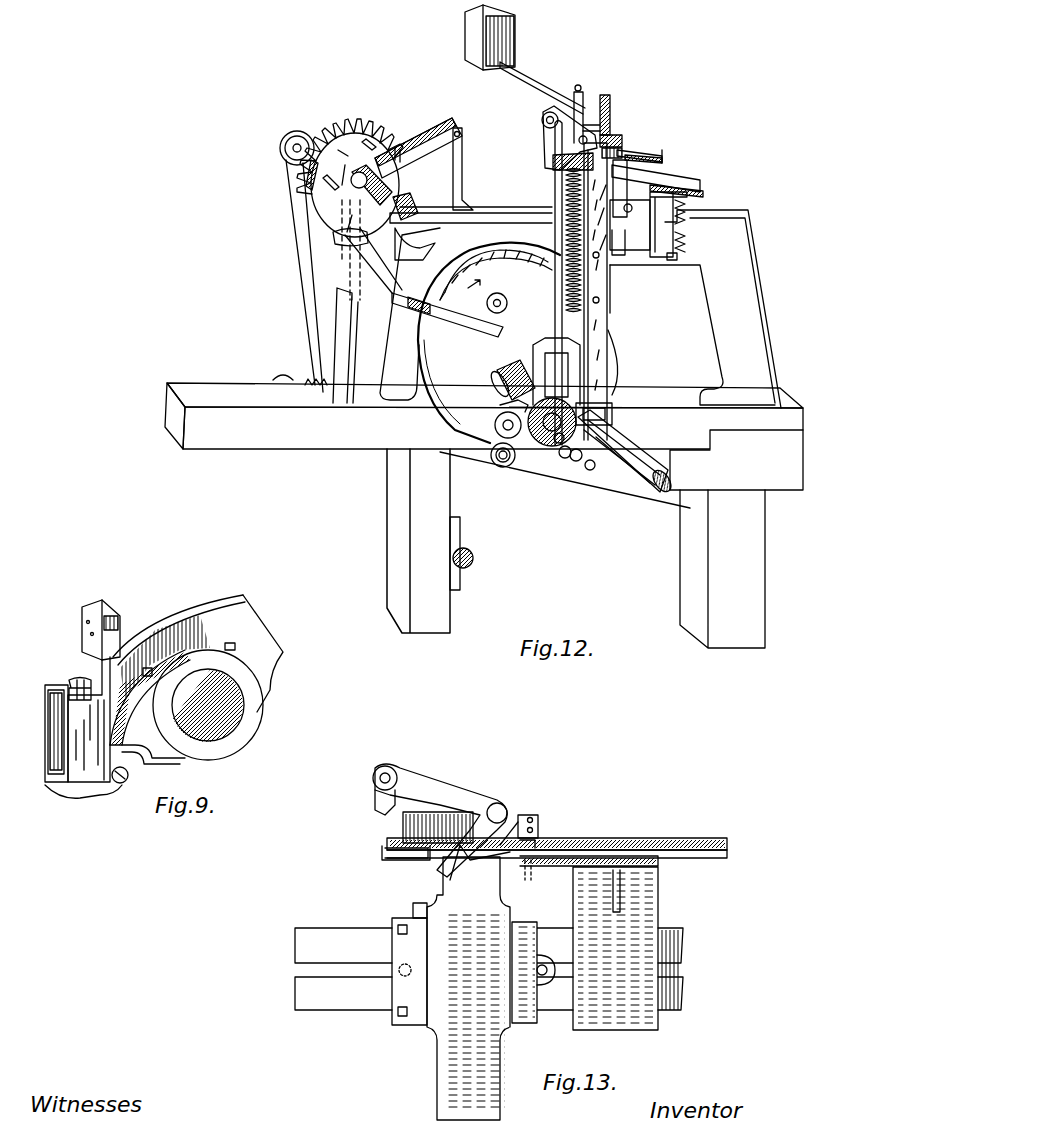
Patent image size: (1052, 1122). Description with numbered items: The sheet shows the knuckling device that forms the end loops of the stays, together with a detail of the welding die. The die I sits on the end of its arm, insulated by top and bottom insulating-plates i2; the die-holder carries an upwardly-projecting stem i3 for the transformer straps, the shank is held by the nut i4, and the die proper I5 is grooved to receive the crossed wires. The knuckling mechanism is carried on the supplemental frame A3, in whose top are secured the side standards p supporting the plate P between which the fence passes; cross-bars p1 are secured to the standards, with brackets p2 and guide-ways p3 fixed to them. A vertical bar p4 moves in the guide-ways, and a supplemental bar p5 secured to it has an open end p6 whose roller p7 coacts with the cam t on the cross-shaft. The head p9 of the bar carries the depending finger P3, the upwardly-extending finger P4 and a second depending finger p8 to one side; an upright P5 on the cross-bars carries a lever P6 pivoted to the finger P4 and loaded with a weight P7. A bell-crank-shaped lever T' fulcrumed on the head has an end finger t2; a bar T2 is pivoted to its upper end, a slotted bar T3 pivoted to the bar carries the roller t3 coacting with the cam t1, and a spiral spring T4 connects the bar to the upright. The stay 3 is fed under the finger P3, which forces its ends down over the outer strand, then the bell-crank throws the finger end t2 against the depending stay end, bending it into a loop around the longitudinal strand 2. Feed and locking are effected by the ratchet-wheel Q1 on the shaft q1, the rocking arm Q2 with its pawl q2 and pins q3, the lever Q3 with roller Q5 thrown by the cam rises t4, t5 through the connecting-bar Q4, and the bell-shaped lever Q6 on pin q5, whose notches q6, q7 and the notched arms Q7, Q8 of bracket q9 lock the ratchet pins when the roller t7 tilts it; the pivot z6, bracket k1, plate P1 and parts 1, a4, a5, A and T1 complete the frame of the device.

In FIG. 12, the table frame A is at (350, 448).
In FIG. 12, the table leg a4 is at (722, 569).
In FIG. 12, the table leg bracket a5 is at (430, 541).
In FIG. 12, the supplemental frame A3 is at (372, 362).
In FIG. 12, the side standards p is at (582, 180).
In FIG. 13, the cross-bars p1 is at (668, 930).
In FIG. 12, the brackets p2 is at (645, 258).
In FIG. 13, the brackets p2 is at (615, 948).
In FIG. 12, the guide-ways p3 is at (622, 150).
In FIG. 13, the guide-ways p3 is at (540, 826).
In FIG. 12, the vertical bar p4 is at (612, 257).
In FIG. 13, the vertical bar p4 is at (450, 1015).
In FIG. 13, the supplemental bar p5 is at (412, 1010).
In FIG. 12, the open end p6 is at (612, 360).
In FIG. 12, the roller p7 is at (598, 462).
In FIG. 12, the bar p8 is at (604, 212).
In FIG. 13, the bar p8 is at (545, 838).
In FIG. 12, the head p9 is at (612, 135).
In FIG. 13, the head p9 is at (522, 826).
In FIG. 12, the plate P is at (640, 148).
In FIG. 12, the plate P1 is at (675, 172).
In FIG. 12, the depending finger P3 is at (620, 150).
In FIG. 12, the upwardly-extending finger P4 is at (605, 95).
In FIG. 12, the upright P5 is at (578, 86).
In FIG. 12, the lever P6 is at (545, 82).
In FIG. 12, the weight P7 is at (465, 42).
In FIG. 12, the bracket k1 is at (680, 245).
In FIG. 12, the lever T1 is at (560, 135).
In FIG. 13, the lever T1 is at (441, 822).
In FIG. 12, the bar T2 is at (553, 313).
In FIG. 12, the slotted bar T3 is at (540, 345).
In FIG. 12, the spiral spring T4 is at (565, 305).
In FIG. 12, the bell-crank-shaped lever T' is at (623, 484).
In FIG. 12, the cam t is at (553, 450).
In FIG. 12, the cam t1 is at (540, 460).
In FIG. 12, the end finger t2 is at (560, 168).
In FIG. 12, the roller t3 is at (570, 462).
In FIG. 12, the main rise t4 is at (495, 462).
In FIG. 12, the main rise t5 is at (492, 262).
In FIG. 12, the roller t7 is at (495, 415).
In FIG. 12, the pivot z6 is at (486, 300).
In FIG. 12, the ratchet-wheel Q1 is at (330, 200).
In FIG. 12, the rocking arm Q2 is at (280, 150).
In FIG. 12, the lever Q3 is at (655, 505).
In FIG. 12, the connecting-bar Q4 is at (308, 335).
In FIG. 12, the roller Q5 is at (498, 470).
In FIG. 12, the bell-shaped lever Q6 is at (402, 305).
In FIG. 12, the arm Q7 is at (430, 150).
In FIG. 12, the arm Q8 is at (410, 160).
In FIG. 12, the shaft q1 is at (410, 223).
In FIG. 12, the pawl q2 is at (400, 195).
In FIG. 12, the pins q3 is at (325, 185).
In FIG. 12, the pin q5 is at (430, 243).
In FIG. 12, the end notch q6 is at (340, 240).
In FIG. 12, the end notch q7 is at (355, 250).
In FIG. 12, the bracket q9 is at (462, 160).
In FIG. 9, the arm 1 is at (252, 630).
In FIG. 9, the die I is at (186, 699).
In FIG. 9, the die proper I5 is at (80, 678).
In FIG. 9, the insulating-plates i2 is at (50, 780).
In FIG. 9, the stem i3 is at (68, 690).
In FIG. 9, the nut i4 is at (94, 740).
In FIG. 13, the longitudinal strand 2 is at (560, 842).
In FIG. 13, the stay 3 is at (645, 838).